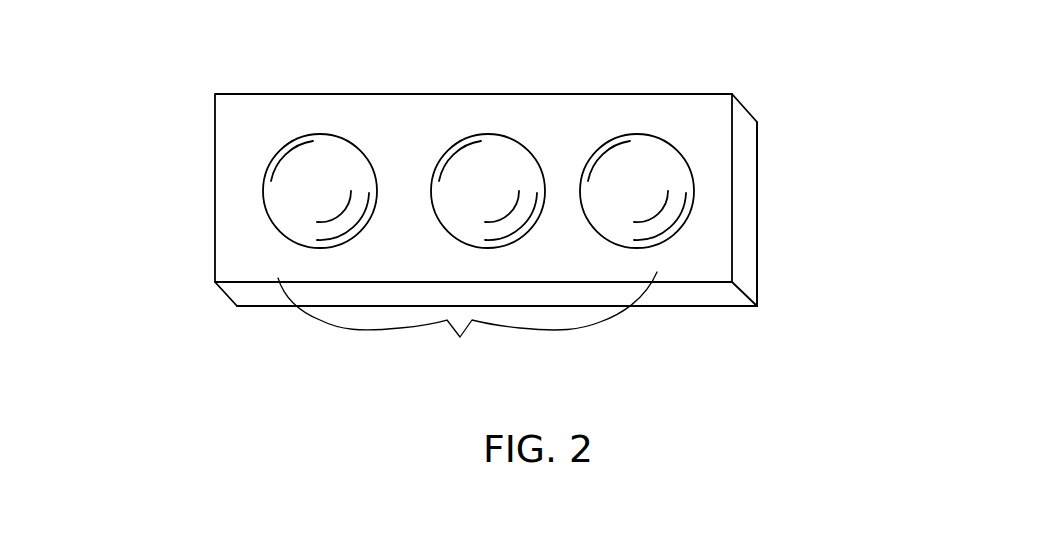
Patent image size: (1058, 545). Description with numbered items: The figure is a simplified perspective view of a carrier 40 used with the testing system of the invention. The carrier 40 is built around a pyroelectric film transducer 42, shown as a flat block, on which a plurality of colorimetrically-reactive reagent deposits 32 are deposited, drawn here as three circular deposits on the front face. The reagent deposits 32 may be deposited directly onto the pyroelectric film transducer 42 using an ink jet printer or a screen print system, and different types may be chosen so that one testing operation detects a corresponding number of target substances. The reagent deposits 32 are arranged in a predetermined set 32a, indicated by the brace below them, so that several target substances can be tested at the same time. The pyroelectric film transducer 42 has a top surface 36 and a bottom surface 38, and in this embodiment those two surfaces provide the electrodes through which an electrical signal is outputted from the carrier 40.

The colorimetrically-reactive reagent deposits 32 is at (628, 173).
The predetermined set 32a is at (467, 322).
The top surface 36 is at (672, 125).
The bottom surface 38 is at (762, 250).
The carrier 40 is at (132, 192).
The pyroelectric film transducer 42 is at (700, 307).